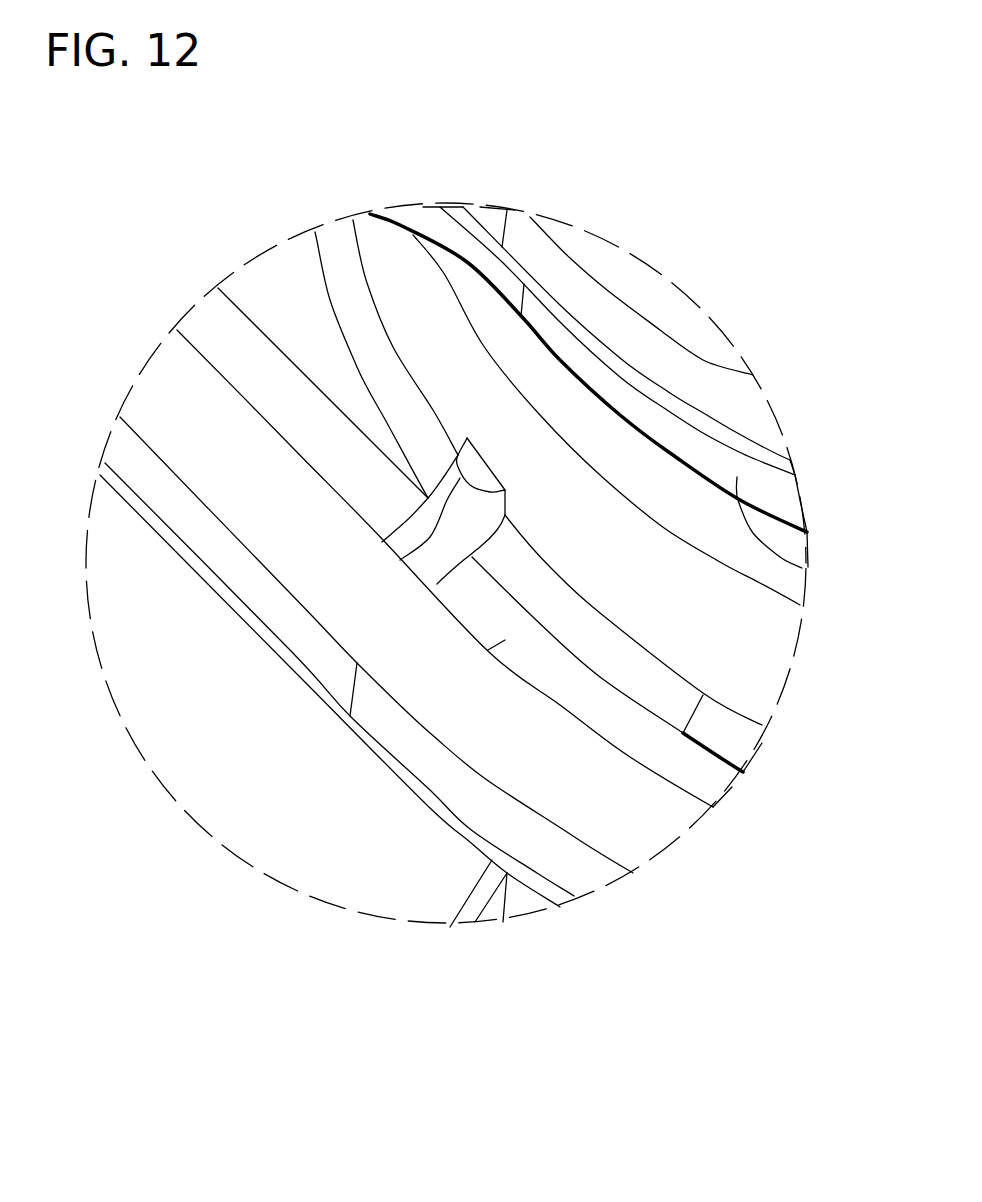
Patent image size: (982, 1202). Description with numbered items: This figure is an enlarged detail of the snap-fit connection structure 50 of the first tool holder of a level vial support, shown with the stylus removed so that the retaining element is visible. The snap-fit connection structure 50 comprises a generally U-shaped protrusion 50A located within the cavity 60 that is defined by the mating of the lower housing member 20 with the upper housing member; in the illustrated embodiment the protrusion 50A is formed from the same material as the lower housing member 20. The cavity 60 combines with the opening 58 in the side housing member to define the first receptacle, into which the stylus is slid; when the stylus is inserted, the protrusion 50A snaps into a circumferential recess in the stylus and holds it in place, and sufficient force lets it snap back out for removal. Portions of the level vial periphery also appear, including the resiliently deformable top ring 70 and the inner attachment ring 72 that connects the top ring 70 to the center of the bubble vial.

The lower housing member 20 is at (534, 880).
The snap-fit connection structure 50 is at (513, 447).
The U-shaped protrusion 50A is at (442, 552).
The opening 58 is at (337, 392).
The cavity 60 is at (313, 333).
The top ring 70 is at (708, 388).
The inner attachment ring 72 is at (808, 565).